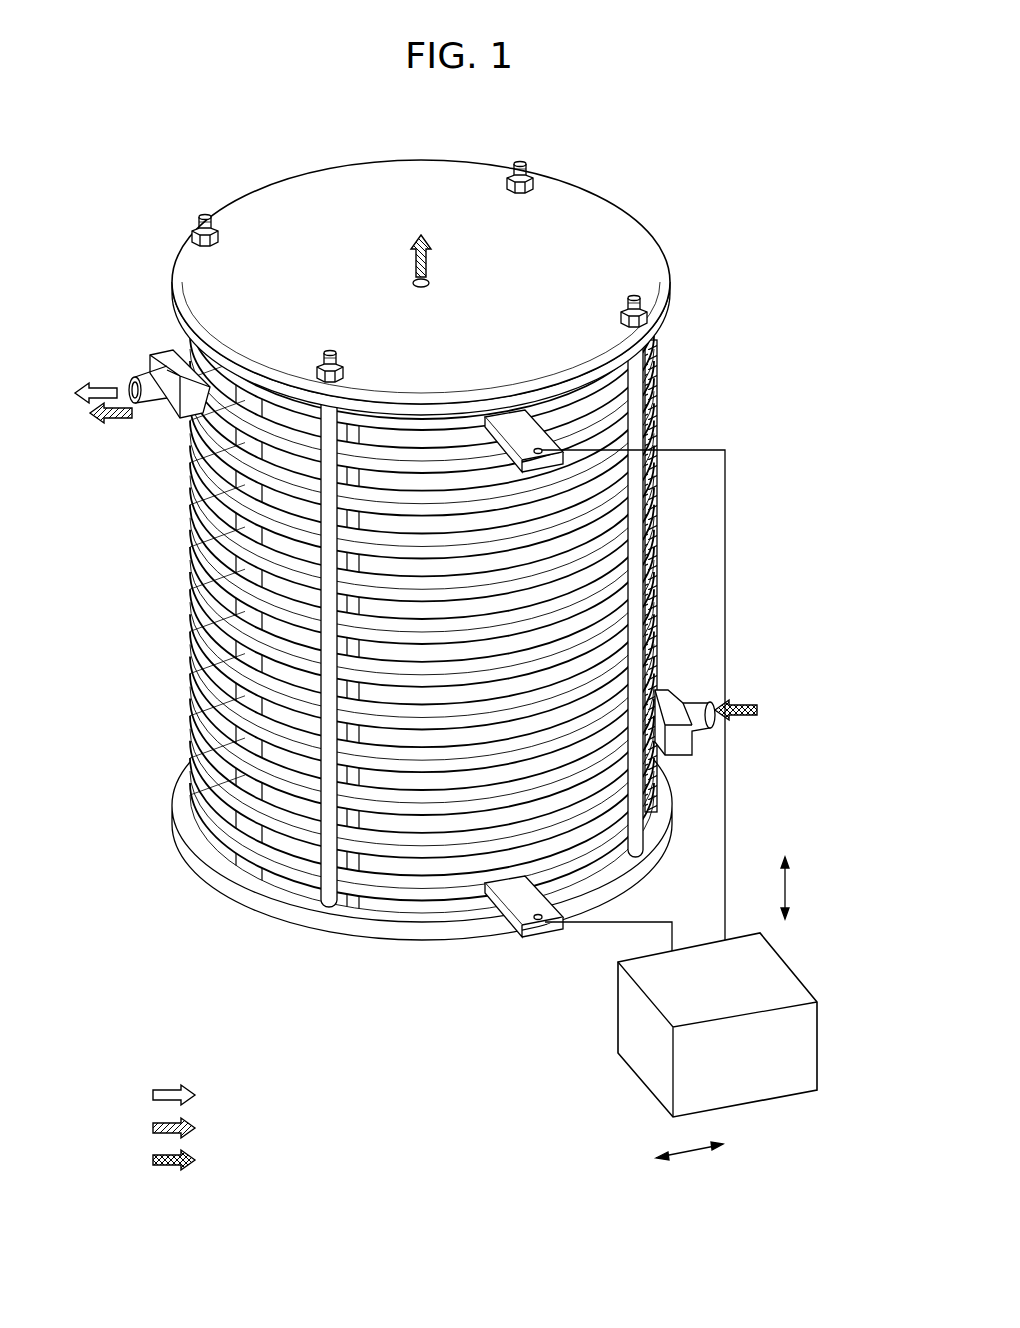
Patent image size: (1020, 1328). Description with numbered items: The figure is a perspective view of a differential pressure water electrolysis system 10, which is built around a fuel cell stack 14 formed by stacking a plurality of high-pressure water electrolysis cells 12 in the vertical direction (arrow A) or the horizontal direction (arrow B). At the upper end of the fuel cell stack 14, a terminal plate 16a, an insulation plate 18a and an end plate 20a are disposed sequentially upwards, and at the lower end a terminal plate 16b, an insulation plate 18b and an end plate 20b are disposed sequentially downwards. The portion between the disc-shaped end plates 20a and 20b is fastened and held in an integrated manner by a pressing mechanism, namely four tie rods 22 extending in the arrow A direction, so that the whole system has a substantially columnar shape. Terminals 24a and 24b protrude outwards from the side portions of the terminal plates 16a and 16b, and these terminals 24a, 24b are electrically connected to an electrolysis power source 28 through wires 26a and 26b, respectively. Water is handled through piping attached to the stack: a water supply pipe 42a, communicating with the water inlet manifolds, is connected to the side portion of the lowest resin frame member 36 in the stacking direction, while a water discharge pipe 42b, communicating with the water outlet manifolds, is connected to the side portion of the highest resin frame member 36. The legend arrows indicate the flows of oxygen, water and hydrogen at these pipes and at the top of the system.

The differential pressure water electrolysis system 10 is at (529, 114).
The high-pressure water electrolysis cell 12 is at (204, 540).
The fuel cell stack 14 is at (373, 669).
The terminal plate 16a is at (430, 430).
The terminal plate 16b is at (460, 896).
The insulation plate 18a is at (462, 415).
The insulation plate 18b is at (402, 910).
The end plate 20a is at (590, 203).
The end plate 20b is at (365, 937).
The tie rod 22 is at (328, 907).
The terminal 24a is at (518, 430).
The terminal 24b is at (533, 939).
The wire 26a is at (702, 449).
The wire 26b is at (592, 927).
The electrolysis power source 28 is at (645, 1065).
The resin frame member 36 is at (233, 398).
The water supply pipe 42a is at (694, 704).
The water discharge pipe 42b is at (145, 377).